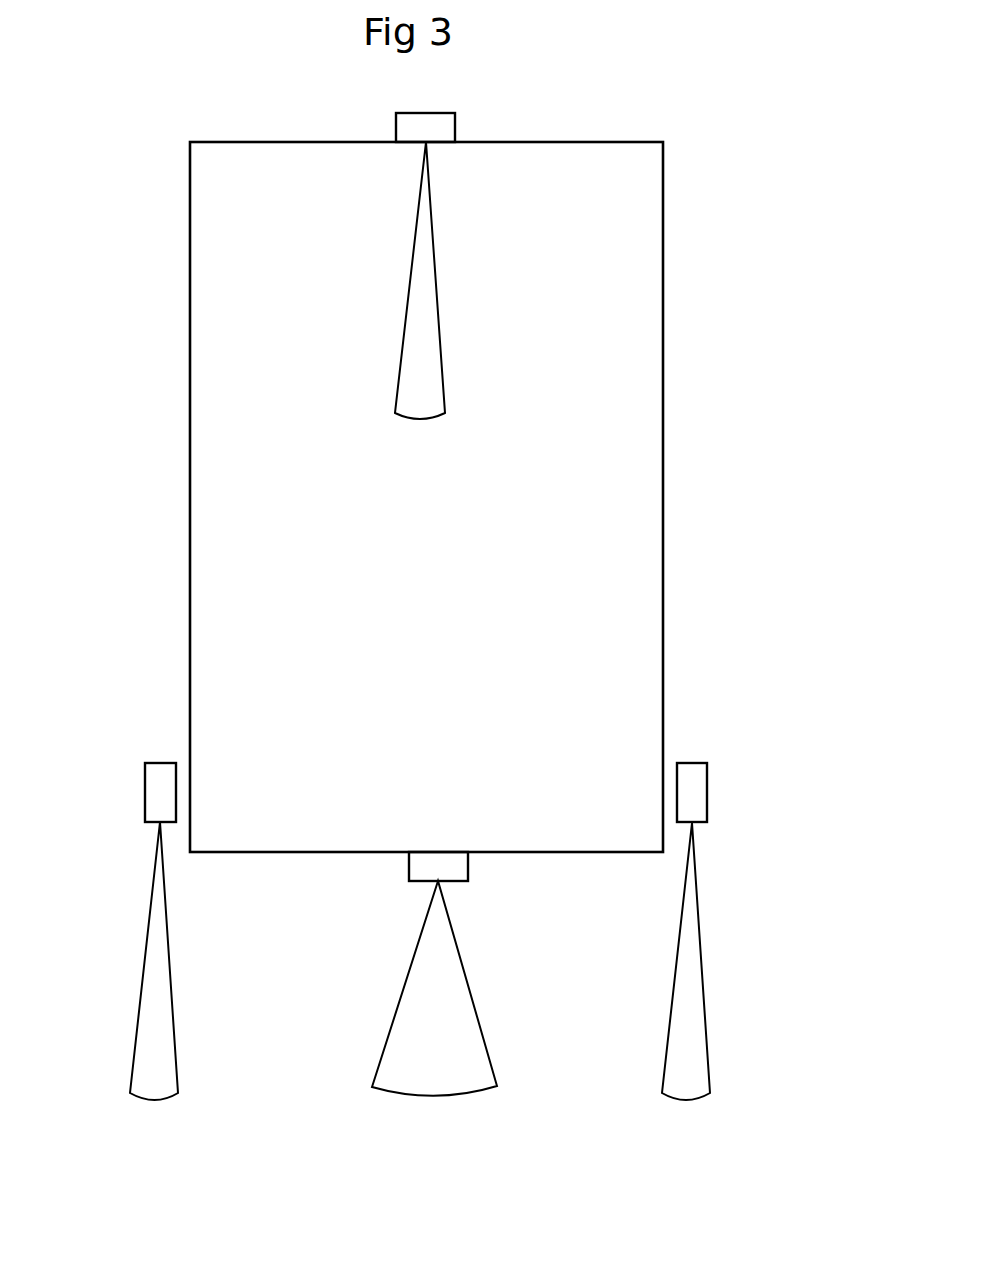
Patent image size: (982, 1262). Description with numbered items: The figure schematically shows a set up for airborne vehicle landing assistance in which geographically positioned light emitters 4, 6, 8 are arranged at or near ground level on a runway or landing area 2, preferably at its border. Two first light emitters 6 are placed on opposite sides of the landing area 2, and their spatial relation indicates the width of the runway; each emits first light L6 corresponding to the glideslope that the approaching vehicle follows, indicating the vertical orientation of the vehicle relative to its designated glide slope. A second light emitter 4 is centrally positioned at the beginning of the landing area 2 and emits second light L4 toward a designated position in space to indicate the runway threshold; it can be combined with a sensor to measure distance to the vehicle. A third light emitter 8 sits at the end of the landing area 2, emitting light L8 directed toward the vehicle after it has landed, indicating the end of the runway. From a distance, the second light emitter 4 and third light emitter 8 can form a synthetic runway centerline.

The landing area 2 is at (190, 495).
The second light emitter 4 is at (455, 881).
The first light emitter 6 is at (148, 792).
The third light emitter 8 is at (396, 126).
The second light L4 is at (470, 999).
The first light L6 is at (167, 970).
The light emitted from the third light emitter L8 is at (438, 321).